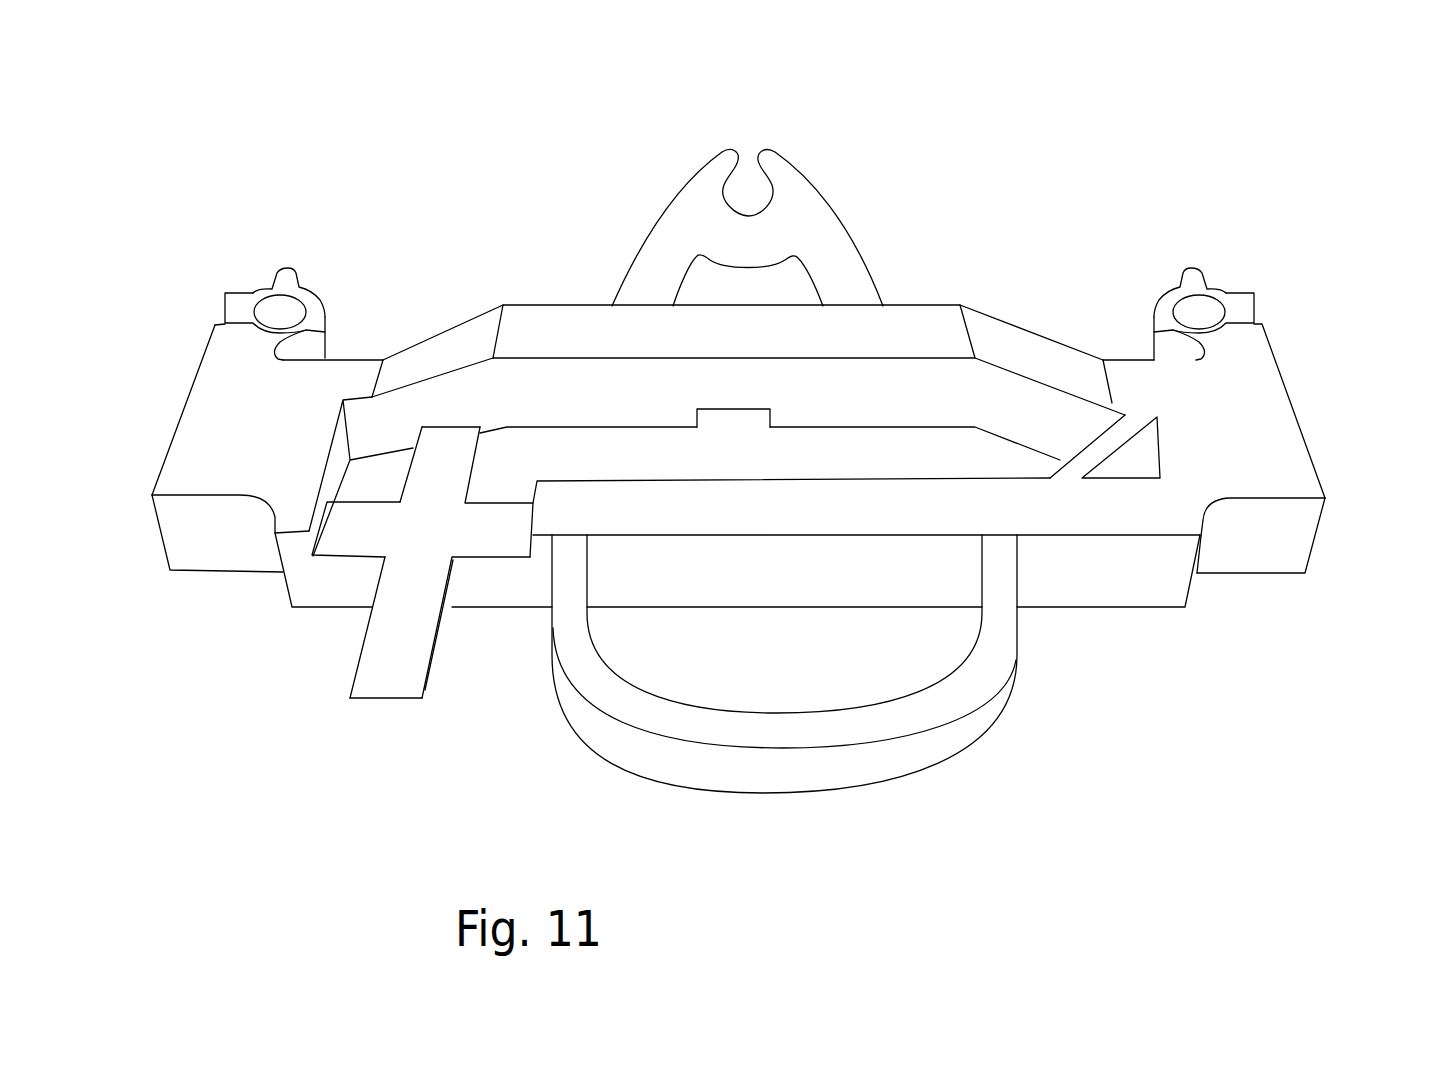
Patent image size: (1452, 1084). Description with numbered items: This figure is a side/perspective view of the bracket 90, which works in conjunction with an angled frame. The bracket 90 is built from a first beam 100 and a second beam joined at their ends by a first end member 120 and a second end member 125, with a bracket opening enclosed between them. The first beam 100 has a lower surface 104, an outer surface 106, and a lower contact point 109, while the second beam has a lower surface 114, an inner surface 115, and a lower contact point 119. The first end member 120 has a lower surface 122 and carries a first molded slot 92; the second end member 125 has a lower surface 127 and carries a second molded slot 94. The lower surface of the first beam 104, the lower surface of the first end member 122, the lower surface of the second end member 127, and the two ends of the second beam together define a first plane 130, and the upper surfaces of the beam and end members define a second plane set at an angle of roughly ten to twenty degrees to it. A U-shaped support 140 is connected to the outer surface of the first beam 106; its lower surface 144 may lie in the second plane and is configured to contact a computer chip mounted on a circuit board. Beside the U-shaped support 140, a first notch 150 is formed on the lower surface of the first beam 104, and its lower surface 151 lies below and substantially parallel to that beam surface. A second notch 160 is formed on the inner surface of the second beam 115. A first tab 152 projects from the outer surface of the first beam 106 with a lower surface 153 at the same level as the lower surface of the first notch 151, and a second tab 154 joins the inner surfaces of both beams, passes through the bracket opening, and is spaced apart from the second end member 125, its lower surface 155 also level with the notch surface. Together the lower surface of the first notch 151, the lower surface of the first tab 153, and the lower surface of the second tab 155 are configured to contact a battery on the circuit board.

The bracket 90 is at (528, 152).
The first molded slot 92 is at (275, 313).
The second molded slot 94 is at (1193, 313).
The first beam 100 is at (750, 512).
The lower surface of the first beam 104 is at (647, 513).
The outer surface of the first beam 106 is at (510, 593).
The lower contact point 109 is at (967, 508).
The lower surface of the second beam 114 is at (580, 325).
The inner surface of the second beam 115 is at (888, 393).
The lower contact point 119 is at (722, 333).
The first end member 120 is at (1293, 440).
The lower surface of the first end member 122 is at (1258, 368).
The second end member 125 is at (192, 448).
The lower surface of the second end member 127 is at (201, 396).
The first plane 130 is at (185, 479).
The U-shaped support 140 is at (918, 745).
The lower surface of the U-shaped support 144 is at (760, 728).
The first notch 150 is at (347, 540).
The lower surface of the first notch 151 is at (387, 527).
The first tab 152 is at (384, 683).
The lower surface of the first tab 153 is at (378, 654).
The second tab 154 is at (462, 446).
The lower surface of the second tab 155 is at (458, 477).
The second notch 160 is at (740, 408).